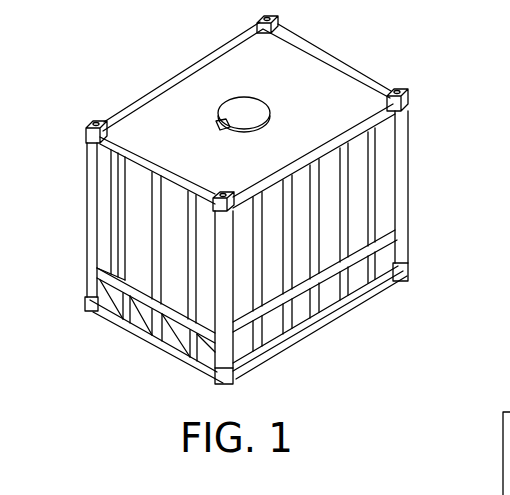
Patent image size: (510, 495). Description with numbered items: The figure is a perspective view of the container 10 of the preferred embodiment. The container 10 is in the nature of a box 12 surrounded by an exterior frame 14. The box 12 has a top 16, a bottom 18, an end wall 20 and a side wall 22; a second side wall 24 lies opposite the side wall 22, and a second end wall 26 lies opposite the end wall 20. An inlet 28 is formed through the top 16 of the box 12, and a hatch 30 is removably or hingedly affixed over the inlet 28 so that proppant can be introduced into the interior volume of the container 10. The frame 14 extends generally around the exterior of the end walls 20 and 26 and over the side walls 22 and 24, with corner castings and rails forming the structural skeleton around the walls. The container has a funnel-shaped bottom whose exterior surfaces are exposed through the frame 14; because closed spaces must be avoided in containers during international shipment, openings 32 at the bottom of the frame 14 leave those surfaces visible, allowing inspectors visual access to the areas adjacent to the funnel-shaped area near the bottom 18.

The container 10 is at (367, 23).
The box 12 is at (363, 90).
The exterior frame 14 is at (377, 208).
The top 16 is at (188, 83).
The bottom 18 is at (333, 320).
The end wall 20 is at (110, 222).
The side wall 22 is at (358, 180).
The side wall 24 is at (142, 97).
The end wall 26 is at (305, 53).
The inlet 28 is at (250, 100).
The hatch 30 is at (247, 128).
The openings 32 is at (282, 330).